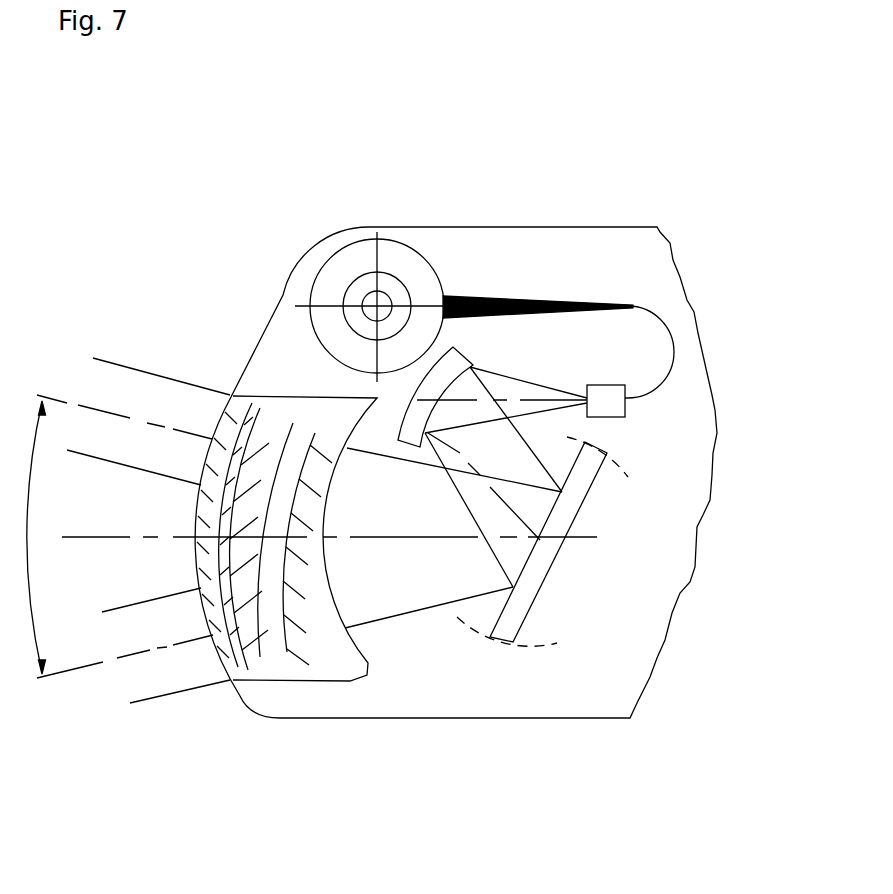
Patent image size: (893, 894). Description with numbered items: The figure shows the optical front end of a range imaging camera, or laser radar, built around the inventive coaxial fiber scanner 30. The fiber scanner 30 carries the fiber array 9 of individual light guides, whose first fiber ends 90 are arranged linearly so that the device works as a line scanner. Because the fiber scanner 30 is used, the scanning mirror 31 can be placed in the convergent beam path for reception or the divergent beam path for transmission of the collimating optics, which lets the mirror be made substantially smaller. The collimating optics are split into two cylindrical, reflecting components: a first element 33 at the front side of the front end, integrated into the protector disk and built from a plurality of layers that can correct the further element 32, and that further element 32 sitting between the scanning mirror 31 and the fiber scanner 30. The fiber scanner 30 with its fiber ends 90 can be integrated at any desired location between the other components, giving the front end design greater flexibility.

The fiber array 9 is at (478, 298).
The fiber scanner 30 is at (327, 282).
The scanning mirror 31 is at (543, 565).
The further element 32 is at (427, 383).
The first element 33 is at (312, 660).
The fiber ends 90 is at (607, 395).